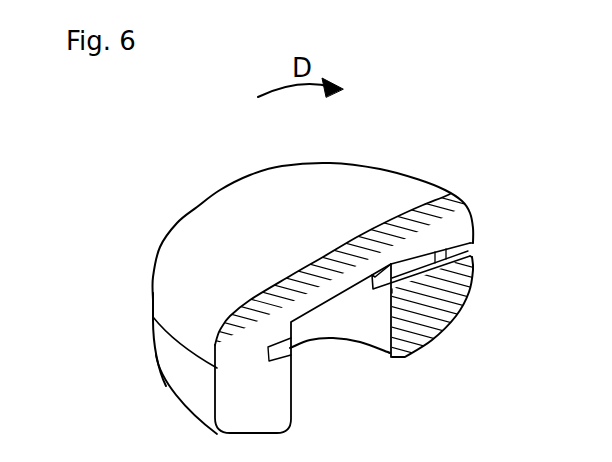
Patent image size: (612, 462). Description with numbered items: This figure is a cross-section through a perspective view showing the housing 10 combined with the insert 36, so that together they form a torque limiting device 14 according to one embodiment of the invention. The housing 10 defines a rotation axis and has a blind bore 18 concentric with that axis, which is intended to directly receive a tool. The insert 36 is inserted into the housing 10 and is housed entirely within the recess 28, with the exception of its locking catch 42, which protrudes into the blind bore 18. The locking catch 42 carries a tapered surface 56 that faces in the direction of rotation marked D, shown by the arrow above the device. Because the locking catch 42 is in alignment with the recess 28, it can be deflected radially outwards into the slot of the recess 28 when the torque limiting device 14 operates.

The housing 10 is at (358, 168).
The torque limiting device 14 is at (181, 199).
The blind bore 18 is at (316, 328).
The recess 28 is at (467, 243).
The insert 36 is at (474, 279).
The locking catch 42 is at (430, 301).
The tapered surface 56 is at (378, 287).